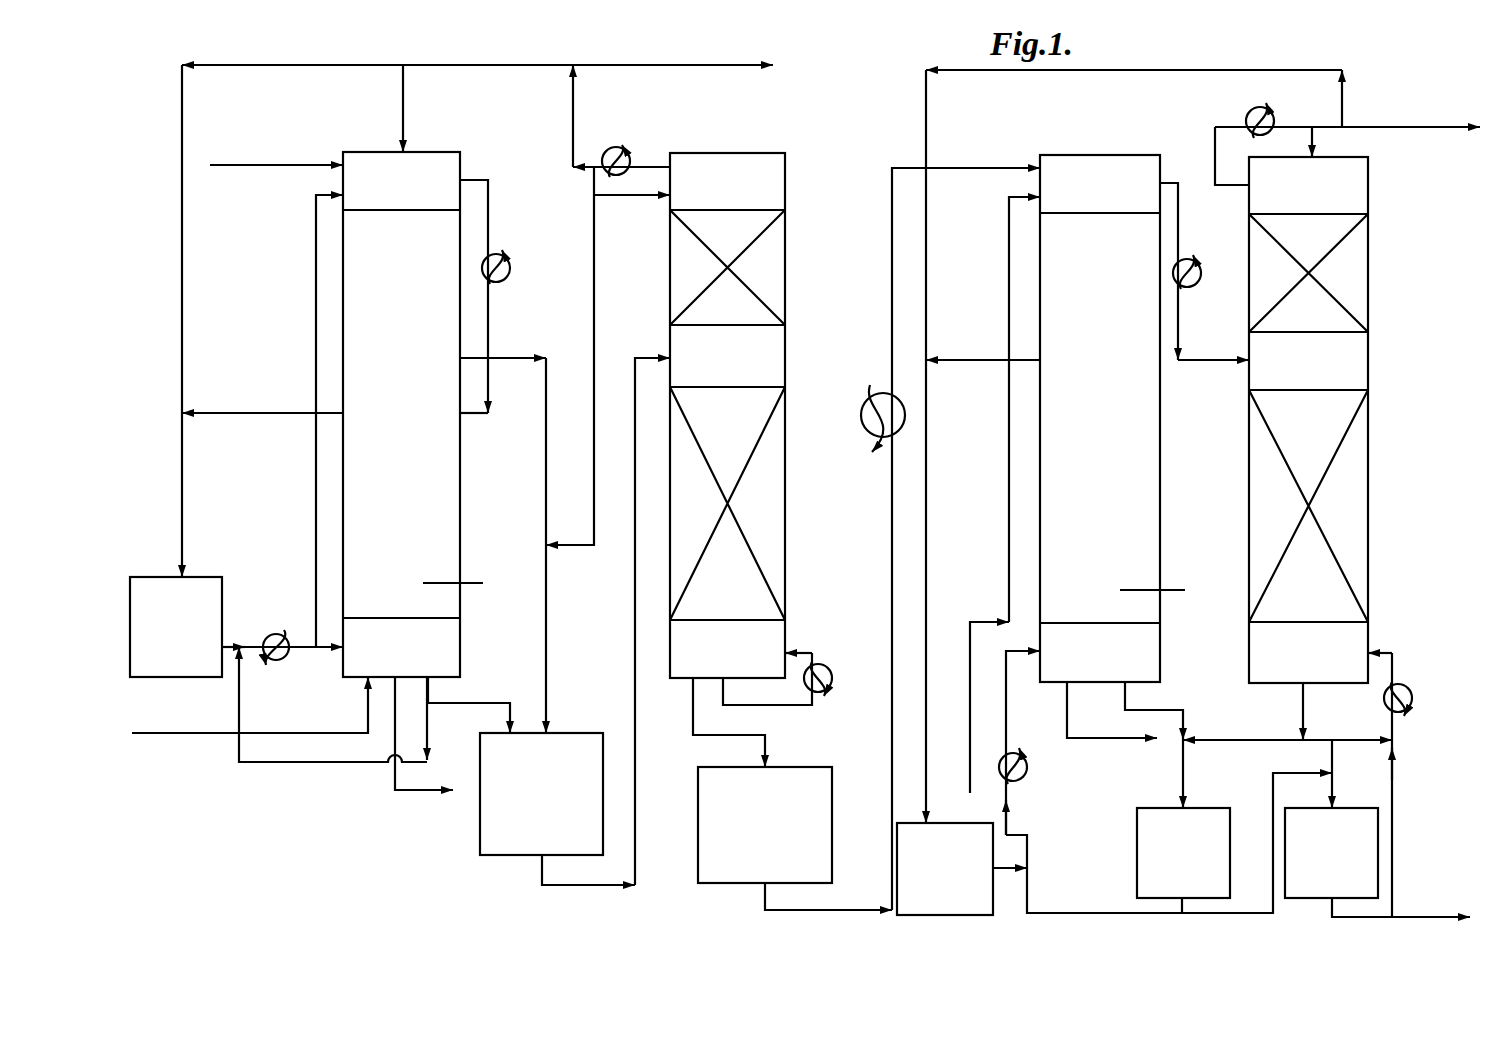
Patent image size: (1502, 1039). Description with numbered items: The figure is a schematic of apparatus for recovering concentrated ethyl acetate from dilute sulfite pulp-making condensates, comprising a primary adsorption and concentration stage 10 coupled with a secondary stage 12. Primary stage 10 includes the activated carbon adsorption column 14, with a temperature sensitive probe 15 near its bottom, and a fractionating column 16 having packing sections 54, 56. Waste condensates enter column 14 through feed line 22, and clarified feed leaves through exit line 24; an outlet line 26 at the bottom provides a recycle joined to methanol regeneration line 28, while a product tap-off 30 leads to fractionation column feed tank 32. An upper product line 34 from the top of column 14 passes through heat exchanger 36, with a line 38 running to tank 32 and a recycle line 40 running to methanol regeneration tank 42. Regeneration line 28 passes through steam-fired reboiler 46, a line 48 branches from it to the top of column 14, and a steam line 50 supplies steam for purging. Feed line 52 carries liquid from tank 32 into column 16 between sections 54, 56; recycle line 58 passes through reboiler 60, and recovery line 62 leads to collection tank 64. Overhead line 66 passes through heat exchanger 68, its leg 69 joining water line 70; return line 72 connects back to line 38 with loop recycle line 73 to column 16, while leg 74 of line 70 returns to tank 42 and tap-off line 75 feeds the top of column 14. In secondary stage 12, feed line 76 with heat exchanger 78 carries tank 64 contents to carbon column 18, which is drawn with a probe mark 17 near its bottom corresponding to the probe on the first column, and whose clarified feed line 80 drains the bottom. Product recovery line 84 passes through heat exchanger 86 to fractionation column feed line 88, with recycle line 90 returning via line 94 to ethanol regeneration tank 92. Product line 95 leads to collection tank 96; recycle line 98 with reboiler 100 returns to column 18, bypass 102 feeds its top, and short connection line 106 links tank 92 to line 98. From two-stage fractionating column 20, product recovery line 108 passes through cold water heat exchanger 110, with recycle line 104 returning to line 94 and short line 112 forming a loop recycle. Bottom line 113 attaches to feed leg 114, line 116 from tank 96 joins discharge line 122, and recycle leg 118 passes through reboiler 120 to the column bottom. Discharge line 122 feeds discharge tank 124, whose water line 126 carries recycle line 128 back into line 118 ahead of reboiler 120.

The primary adsorption and concentration stage 10 is at (803, 130).
The secondary stage 12 is at (1432, 203).
The carbon adsorption column 14 is at (436, 152).
The temperature sensitive probe 15 is at (460, 583).
The fractionating column 16 is at (790, 190).
The carbon bed level line 17 is at (1170, 590).
The activated carbon filled column 18 is at (1168, 165).
The fractionating column 20 is at (1368, 200).
The feed line 22 is at (288, 162).
The exit line 24 is at (395, 778).
The outlet line 26 is at (445, 690).
The methanol regeneration line 28 is at (250, 645).
The product tap-off 30 is at (488, 703).
The fractionation column feed tank 32 is at (565, 733).
The upper product line 34 is at (490, 200).
The heat exchanger 36 is at (511, 268).
The line 38 is at (546, 468).
The recycle line 40 is at (232, 413).
The methanol regeneration tank 42 is at (190, 577).
The steam-fired reboiler 46 is at (276, 634).
The line 48 is at (316, 478).
The steam line 50 is at (192, 733).
The fractionation column feed line 52 is at (635, 765).
The packing section 54 is at (785, 262).
The packing section 56 is at (785, 500).
The recycle line 58 is at (800, 706).
The steam-fired reboiler 60 is at (832, 682).
The recovery line 62 is at (693, 714).
The collection tank 64 is at (825, 767).
The line 66 is at (668, 167).
The heat exchanger 68 is at (606, 148).
The leg 69 is at (573, 138).
The water line 70 is at (745, 68).
The return line 72 is at (594, 297).
The loop recycle line 73 is at (636, 196).
The leg 74 is at (502, 65).
The tap-off line 75 is at (403, 100).
The feed line 76 is at (892, 560).
The heat exchanger 78 is at (855, 423).
The clarified feed line 80 is at (1067, 718).
The product recovery line 84 is at (1180, 215).
The heat exchanger 86 is at (1202, 278).
The fractionation column feed line 88 is at (1215, 366).
The recycle line 90 is at (960, 360).
The ethanol regeneration tank 92 is at (940, 823).
The line 94 is at (928, 500).
The product line 95 is at (1150, 710).
The collection tank 96 is at (1200, 808).
The recycle line 98 is at (1088, 913).
The reboiler 100 is at (1015, 750).
The bypass 102 is at (970, 618).
The recycle line 104 is at (1170, 70).
The short connection line 106 is at (1000, 880).
The product recovery line 108 is at (1410, 130).
The cold water heat exchanger 110 is at (1246, 116).
The short line 112 is at (1314, 138).
The bottom line 113 is at (1303, 703).
The feed leg 114 is at (1232, 724).
The line 116 is at (1228, 917).
The recycle leg 118 is at (1360, 722).
The reboiler 120 is at (1412, 698).
The discharge line 122 is at (1333, 764).
The discharge tank 124 is at (1308, 903).
The water line 126 is at (1410, 918).
The recycle line 128 is at (1392, 808).